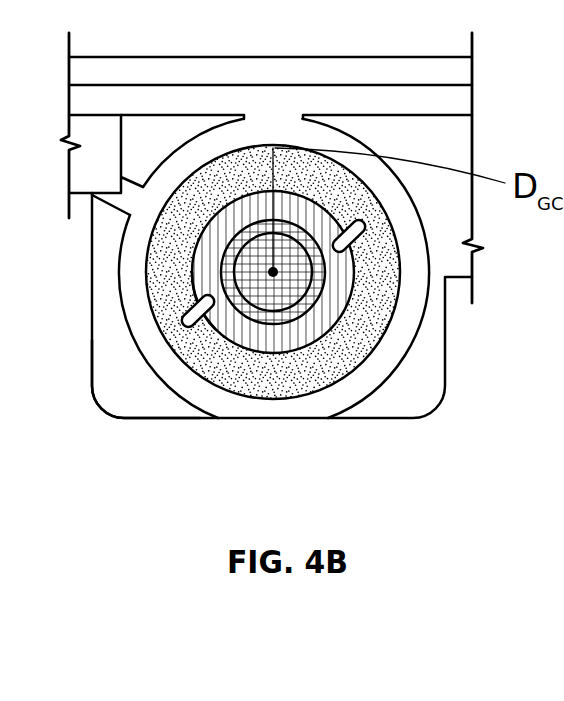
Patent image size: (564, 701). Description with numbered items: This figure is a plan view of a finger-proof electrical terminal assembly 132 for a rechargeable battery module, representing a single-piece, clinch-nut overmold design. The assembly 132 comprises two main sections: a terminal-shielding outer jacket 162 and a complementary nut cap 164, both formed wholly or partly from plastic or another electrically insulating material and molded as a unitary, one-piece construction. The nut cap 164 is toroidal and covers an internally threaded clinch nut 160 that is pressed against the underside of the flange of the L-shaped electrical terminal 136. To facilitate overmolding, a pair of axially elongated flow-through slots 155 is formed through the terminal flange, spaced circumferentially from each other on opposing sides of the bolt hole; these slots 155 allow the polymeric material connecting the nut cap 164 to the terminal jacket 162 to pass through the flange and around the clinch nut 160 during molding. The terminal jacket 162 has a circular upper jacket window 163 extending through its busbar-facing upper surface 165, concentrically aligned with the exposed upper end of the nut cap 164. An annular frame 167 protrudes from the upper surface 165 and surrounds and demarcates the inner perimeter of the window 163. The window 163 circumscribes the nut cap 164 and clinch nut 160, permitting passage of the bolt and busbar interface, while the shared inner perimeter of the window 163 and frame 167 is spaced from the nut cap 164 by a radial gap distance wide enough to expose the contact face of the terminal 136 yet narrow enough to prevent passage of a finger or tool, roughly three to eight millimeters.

The finger-proof electrical terminal assembly 132 is at (148, 113).
The electrical terminal 136 is at (337, 360).
The flow-through slots 155 is at (335, 248).
The clinch nut 160 is at (276, 318).
The terminal jacket 162 is at (130, 422).
The jacket window 163 is at (190, 333).
The nut cap 164 is at (237, 350).
The upper surface 165 is at (412, 402).
The annular frame 167 is at (167, 370).